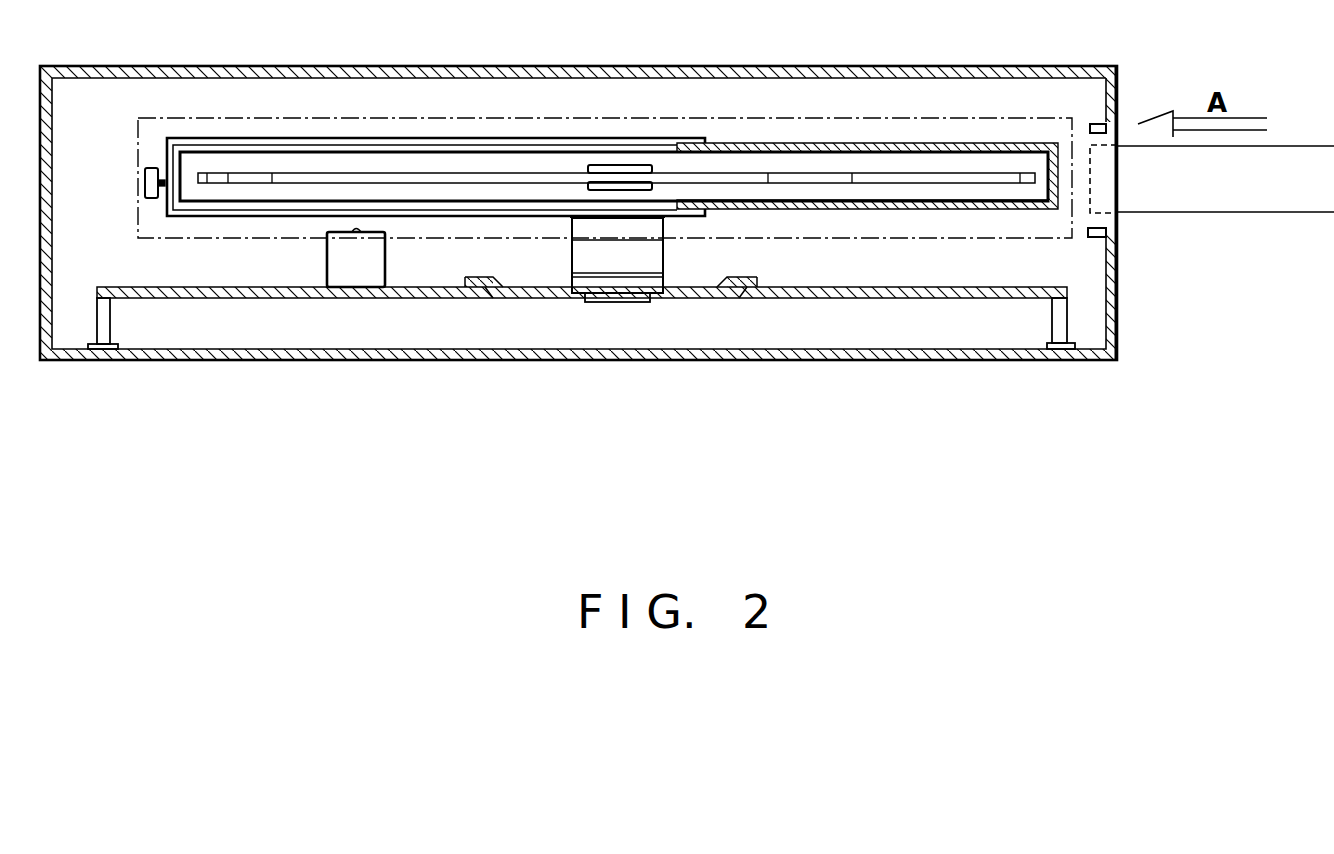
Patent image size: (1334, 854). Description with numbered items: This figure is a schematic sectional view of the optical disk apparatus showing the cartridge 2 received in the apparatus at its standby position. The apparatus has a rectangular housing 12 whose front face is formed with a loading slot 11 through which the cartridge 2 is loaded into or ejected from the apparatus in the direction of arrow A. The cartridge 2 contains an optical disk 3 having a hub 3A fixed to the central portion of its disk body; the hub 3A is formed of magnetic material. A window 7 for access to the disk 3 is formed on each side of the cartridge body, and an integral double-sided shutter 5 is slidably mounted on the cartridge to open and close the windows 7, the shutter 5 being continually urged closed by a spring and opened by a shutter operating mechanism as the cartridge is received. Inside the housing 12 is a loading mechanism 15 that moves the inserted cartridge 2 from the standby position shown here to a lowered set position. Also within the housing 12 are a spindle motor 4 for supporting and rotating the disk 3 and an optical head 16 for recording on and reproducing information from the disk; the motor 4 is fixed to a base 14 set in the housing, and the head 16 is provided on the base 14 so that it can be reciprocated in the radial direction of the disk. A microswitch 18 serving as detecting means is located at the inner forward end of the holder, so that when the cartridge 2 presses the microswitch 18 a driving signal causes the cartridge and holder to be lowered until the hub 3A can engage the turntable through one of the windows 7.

The cartridge 2 is at (1008, 210).
The optical disk 3 is at (930, 184).
The hub 3A is at (604, 166).
The spindle motor 4 is at (615, 266).
The shutter 5 is at (692, 143).
The window 7 is at (243, 150).
The loading slot 11 is at (1113, 219).
The housing 12 is at (1068, 362).
The base 14 is at (830, 297).
The loading mechanism 15 is at (928, 118).
The optical head 16 is at (362, 278).
The microswitch 18 is at (150, 187).